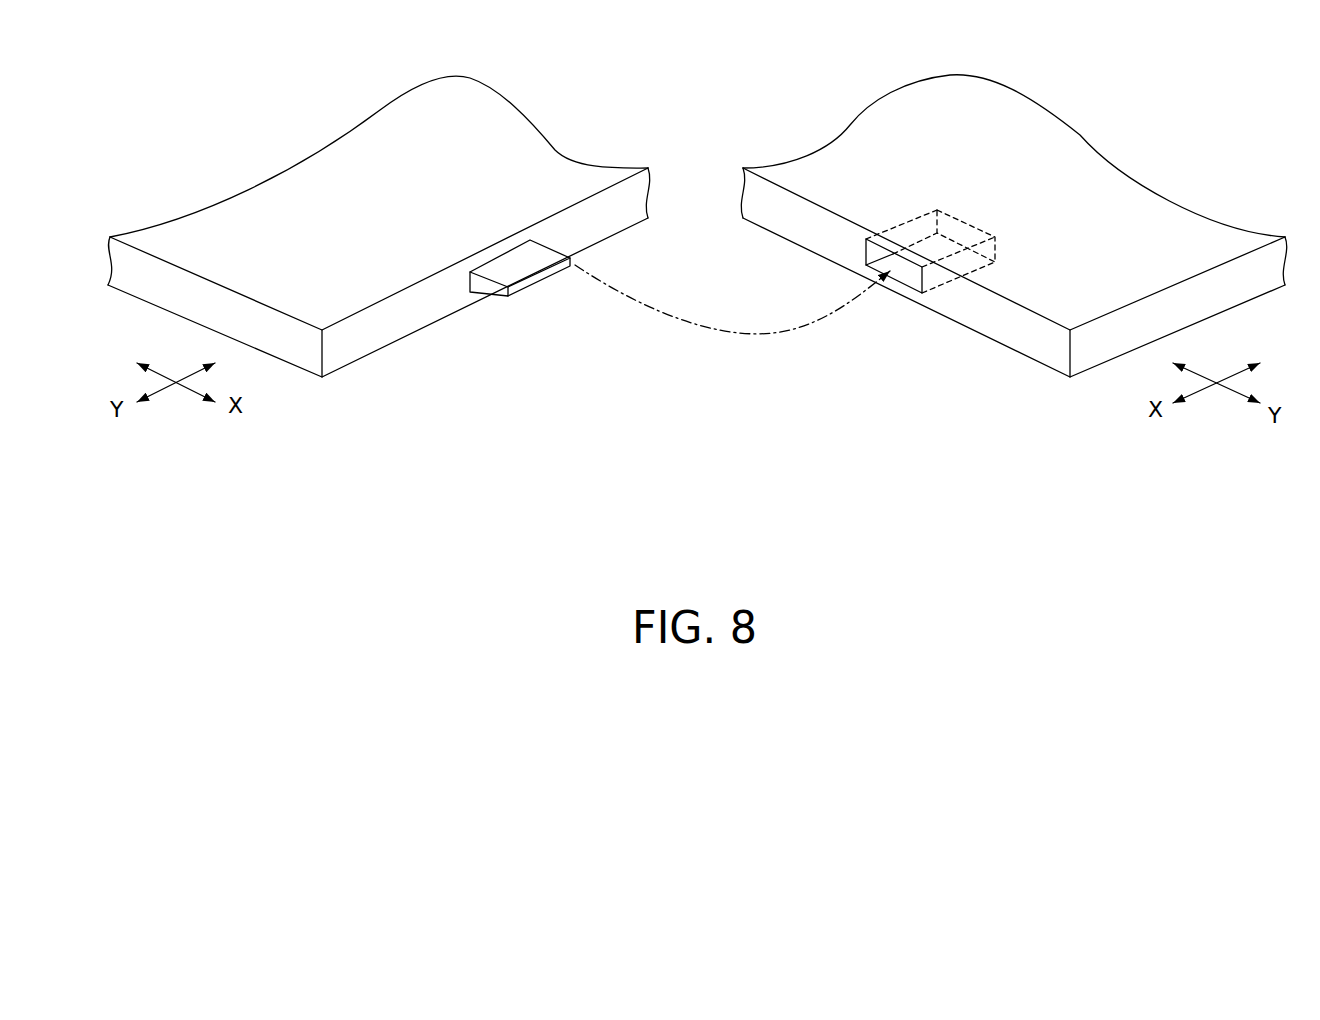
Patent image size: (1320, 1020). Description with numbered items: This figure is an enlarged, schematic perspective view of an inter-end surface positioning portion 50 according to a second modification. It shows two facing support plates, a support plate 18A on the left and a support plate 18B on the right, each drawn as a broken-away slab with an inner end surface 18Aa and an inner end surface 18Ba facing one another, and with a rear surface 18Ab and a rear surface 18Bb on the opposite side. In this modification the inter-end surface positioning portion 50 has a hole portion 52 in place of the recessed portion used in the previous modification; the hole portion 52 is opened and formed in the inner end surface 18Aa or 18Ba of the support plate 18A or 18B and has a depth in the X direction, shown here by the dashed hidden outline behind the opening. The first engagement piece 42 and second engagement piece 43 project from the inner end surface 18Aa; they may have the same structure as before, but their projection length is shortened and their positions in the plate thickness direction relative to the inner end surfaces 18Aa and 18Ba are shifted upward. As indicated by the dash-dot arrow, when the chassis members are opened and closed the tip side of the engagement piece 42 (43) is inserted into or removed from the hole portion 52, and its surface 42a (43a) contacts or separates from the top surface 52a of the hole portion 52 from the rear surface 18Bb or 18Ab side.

The support plate 18A is at (445, 275).
The support plate 18B is at (1013, 274).
The inner end surface 18Aa is at (353, 343).
The inner end surface 18Ba is at (1047, 342).
The rear surface 18Ab is at (625, 232).
The rear surface 18Bb is at (983, 332).
The first engagement piece 42 is at (554, 320).
The second engagement piece 43 is at (521, 320).
The surface of the first engagement piece 42a is at (521, 336).
The surface of the second engagement piece 43a is at (481, 296).
The hole portion 52 is at (896, 298).
The top surface of the hole portion 52a is at (880, 250).
The inter-end surface positioning portion 50 is at (563, 442).